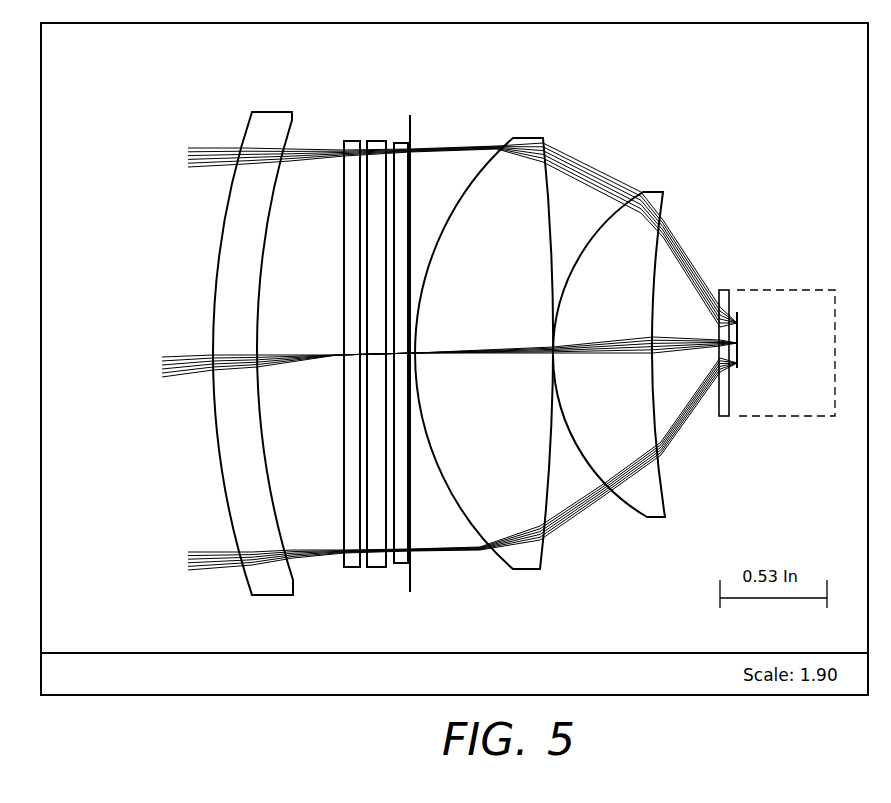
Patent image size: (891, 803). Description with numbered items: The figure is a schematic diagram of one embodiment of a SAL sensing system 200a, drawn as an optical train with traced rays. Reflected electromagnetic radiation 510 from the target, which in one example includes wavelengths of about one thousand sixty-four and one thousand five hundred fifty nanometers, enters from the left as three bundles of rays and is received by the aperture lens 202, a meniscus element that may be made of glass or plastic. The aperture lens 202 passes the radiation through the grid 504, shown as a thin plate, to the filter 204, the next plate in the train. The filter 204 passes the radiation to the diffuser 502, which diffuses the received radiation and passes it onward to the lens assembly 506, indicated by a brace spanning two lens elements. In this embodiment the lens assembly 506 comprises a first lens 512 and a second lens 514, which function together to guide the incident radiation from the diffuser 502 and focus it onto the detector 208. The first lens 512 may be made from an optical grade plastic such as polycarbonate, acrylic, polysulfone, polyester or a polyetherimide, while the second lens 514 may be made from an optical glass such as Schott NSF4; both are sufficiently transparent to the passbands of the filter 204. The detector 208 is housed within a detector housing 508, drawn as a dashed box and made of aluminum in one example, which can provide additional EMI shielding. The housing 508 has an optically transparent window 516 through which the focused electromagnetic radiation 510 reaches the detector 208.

The SAL sensing system 200a is at (192, 113).
The aperture lens 202 is at (278, 112).
The filter 204 is at (380, 141).
The detector 208 is at (738, 358).
The diffuser 502 is at (398, 566).
The grid 504 is at (357, 141).
The lens assembly 506 is at (667, 133).
The detector housing 508 is at (770, 418).
The electromagnetic radiation 510 is at (202, 353).
The first lens 512 is at (520, 572).
The second lens 514 is at (650, 518).
The optically transparent window 516 is at (725, 290).